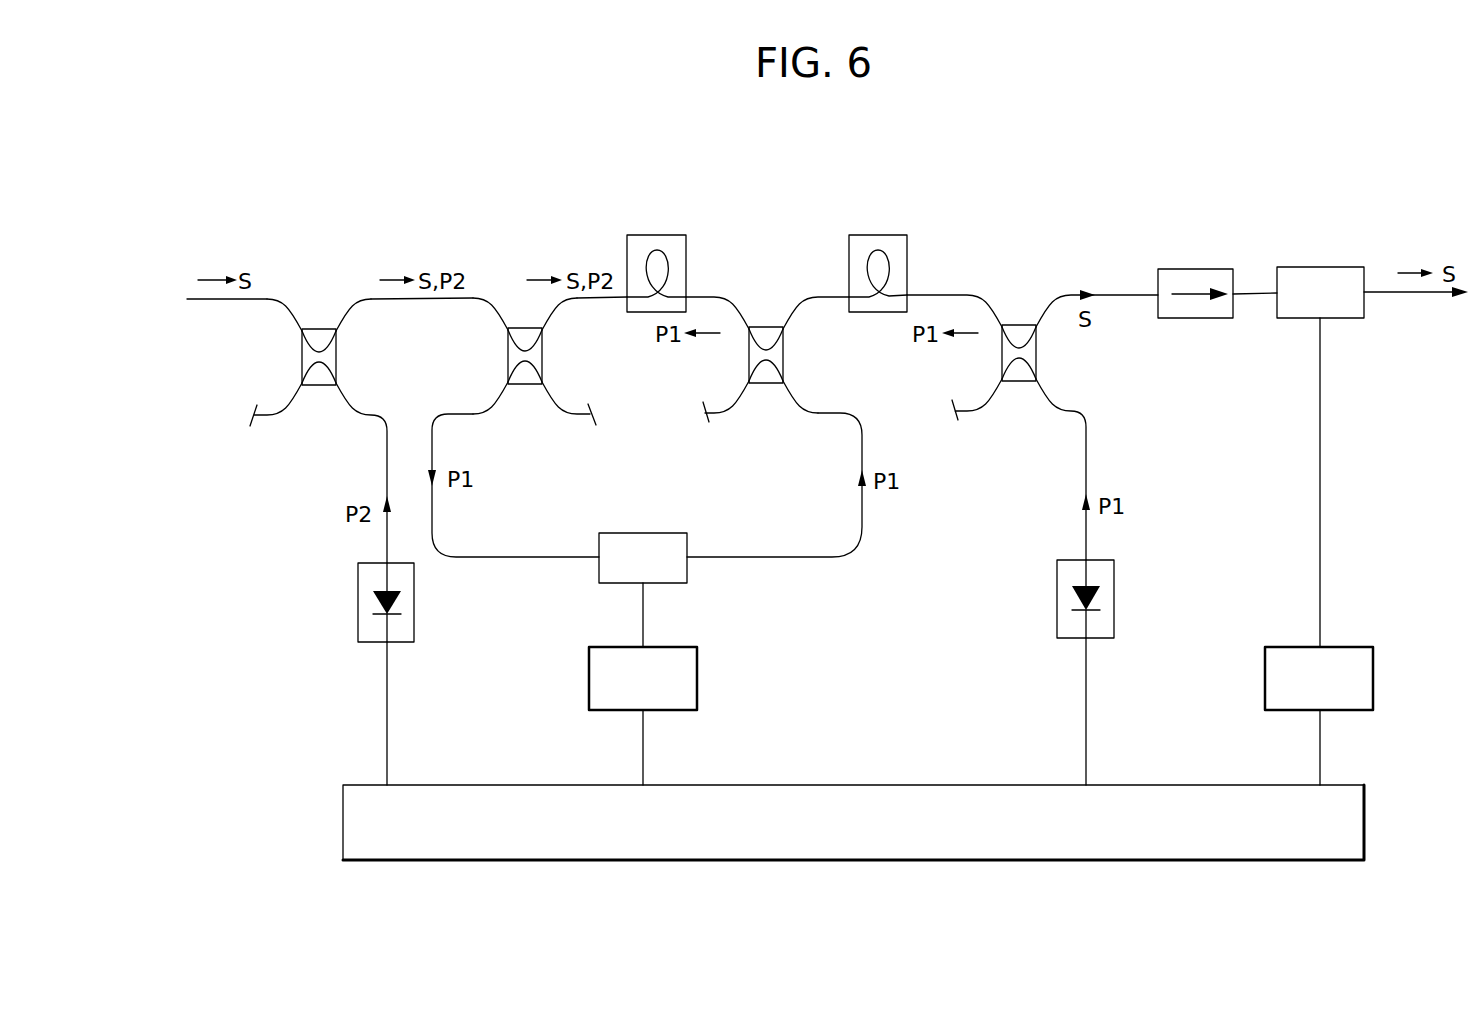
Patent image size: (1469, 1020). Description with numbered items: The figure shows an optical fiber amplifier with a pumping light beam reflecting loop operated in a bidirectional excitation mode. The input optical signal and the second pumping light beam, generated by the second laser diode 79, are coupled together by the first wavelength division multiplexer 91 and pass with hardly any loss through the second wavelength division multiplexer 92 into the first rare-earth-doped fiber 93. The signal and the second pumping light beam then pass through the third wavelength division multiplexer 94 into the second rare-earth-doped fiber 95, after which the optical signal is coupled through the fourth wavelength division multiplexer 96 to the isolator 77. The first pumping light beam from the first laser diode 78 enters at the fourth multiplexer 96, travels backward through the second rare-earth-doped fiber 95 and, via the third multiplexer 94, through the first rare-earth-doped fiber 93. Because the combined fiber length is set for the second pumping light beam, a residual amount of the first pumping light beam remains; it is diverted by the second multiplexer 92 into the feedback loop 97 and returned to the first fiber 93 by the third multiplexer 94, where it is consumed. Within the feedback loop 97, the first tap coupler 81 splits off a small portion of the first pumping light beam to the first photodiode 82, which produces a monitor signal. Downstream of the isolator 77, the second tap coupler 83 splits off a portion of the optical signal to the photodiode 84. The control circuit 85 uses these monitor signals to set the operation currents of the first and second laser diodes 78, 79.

The isolator 77 is at (1199, 269).
The first laser diode 78 is at (1057, 603).
The second laser diode 79 is at (358, 603).
The first tap coupler 81 is at (643, 533).
The first photodiode 82 is at (589, 680).
The second tap coupler 83 is at (1310, 267).
The photodiode 84 is at (1265, 679).
The control circuit 85 is at (896, 785).
The first wavelength division multiplexer 91 is at (316, 329).
The second wavelength division multiplexer 92 is at (519, 384).
The first rare-earth-doped fiber 93 is at (660, 235).
The third wavelength division multiplexer 94 is at (764, 327).
The second rare-earth-doped fiber 95 is at (885, 235).
The fourth wavelength division multiplexer 96 is at (1018, 325).
The feedback loop 97 is at (784, 570).